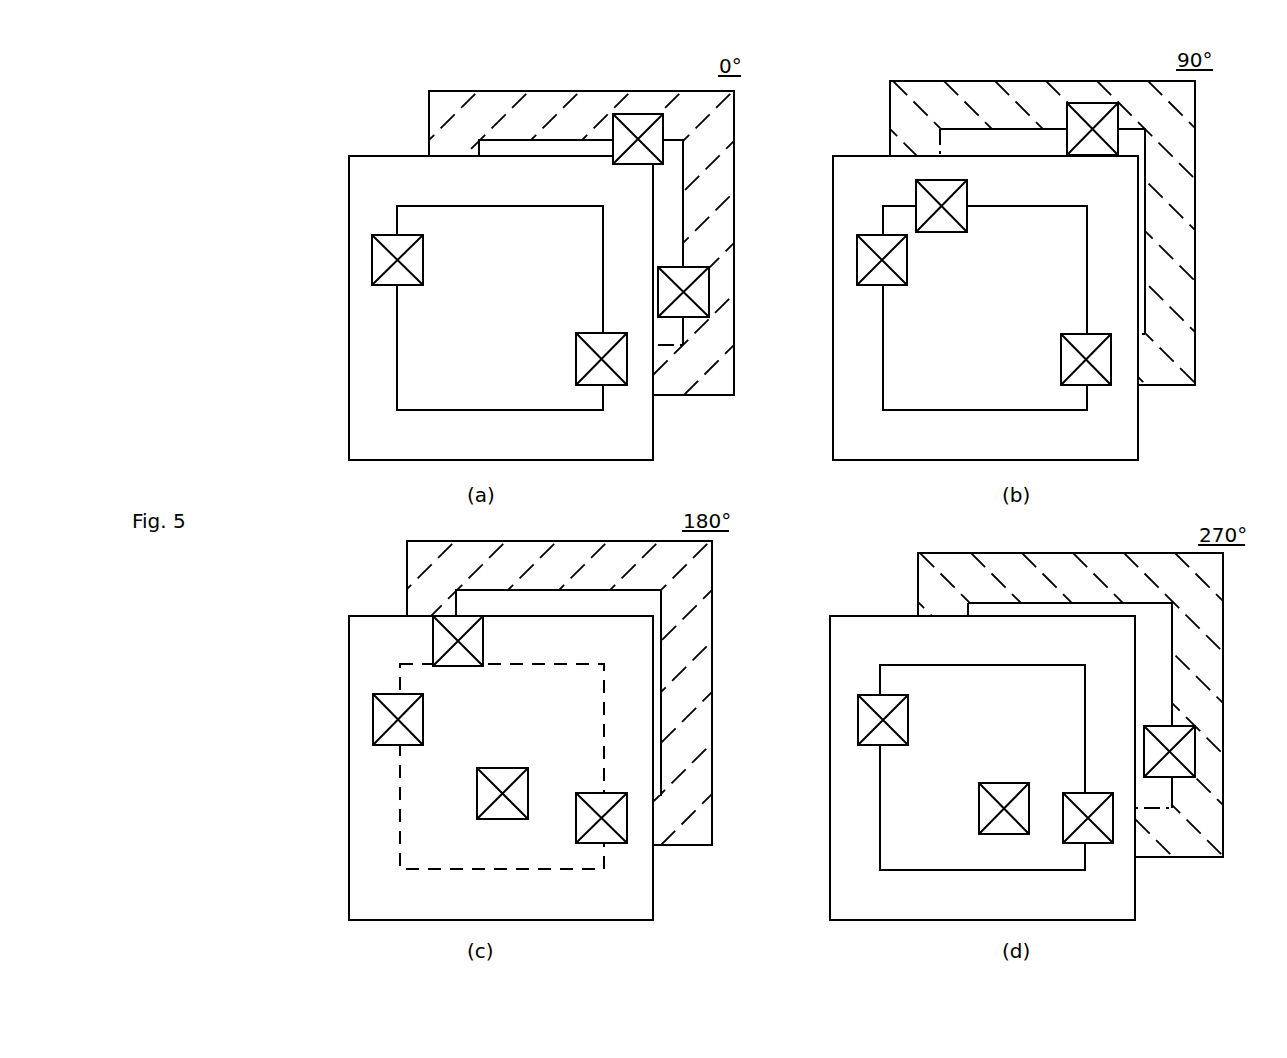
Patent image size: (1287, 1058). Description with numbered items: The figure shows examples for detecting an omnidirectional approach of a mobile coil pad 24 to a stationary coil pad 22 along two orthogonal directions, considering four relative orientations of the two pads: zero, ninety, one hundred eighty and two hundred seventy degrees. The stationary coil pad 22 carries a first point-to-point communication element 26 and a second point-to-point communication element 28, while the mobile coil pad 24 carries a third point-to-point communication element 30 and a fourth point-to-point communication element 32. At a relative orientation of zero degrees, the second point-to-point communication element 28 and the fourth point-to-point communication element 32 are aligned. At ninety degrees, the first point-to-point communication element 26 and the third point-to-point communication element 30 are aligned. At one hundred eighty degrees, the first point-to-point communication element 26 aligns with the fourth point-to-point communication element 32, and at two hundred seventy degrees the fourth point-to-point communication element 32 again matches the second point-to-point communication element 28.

The stationary coil pad 22 is at (349, 205).
The mobile coil pad 24 is at (429, 118).
The first point-to-point communication element 26 is at (423, 286).
The second point-to-point communication element 28 is at (575, 370).
The third point-to-point communication element 30 is at (633, 113).
The fourth point-to-point communication element 32 is at (710, 285).